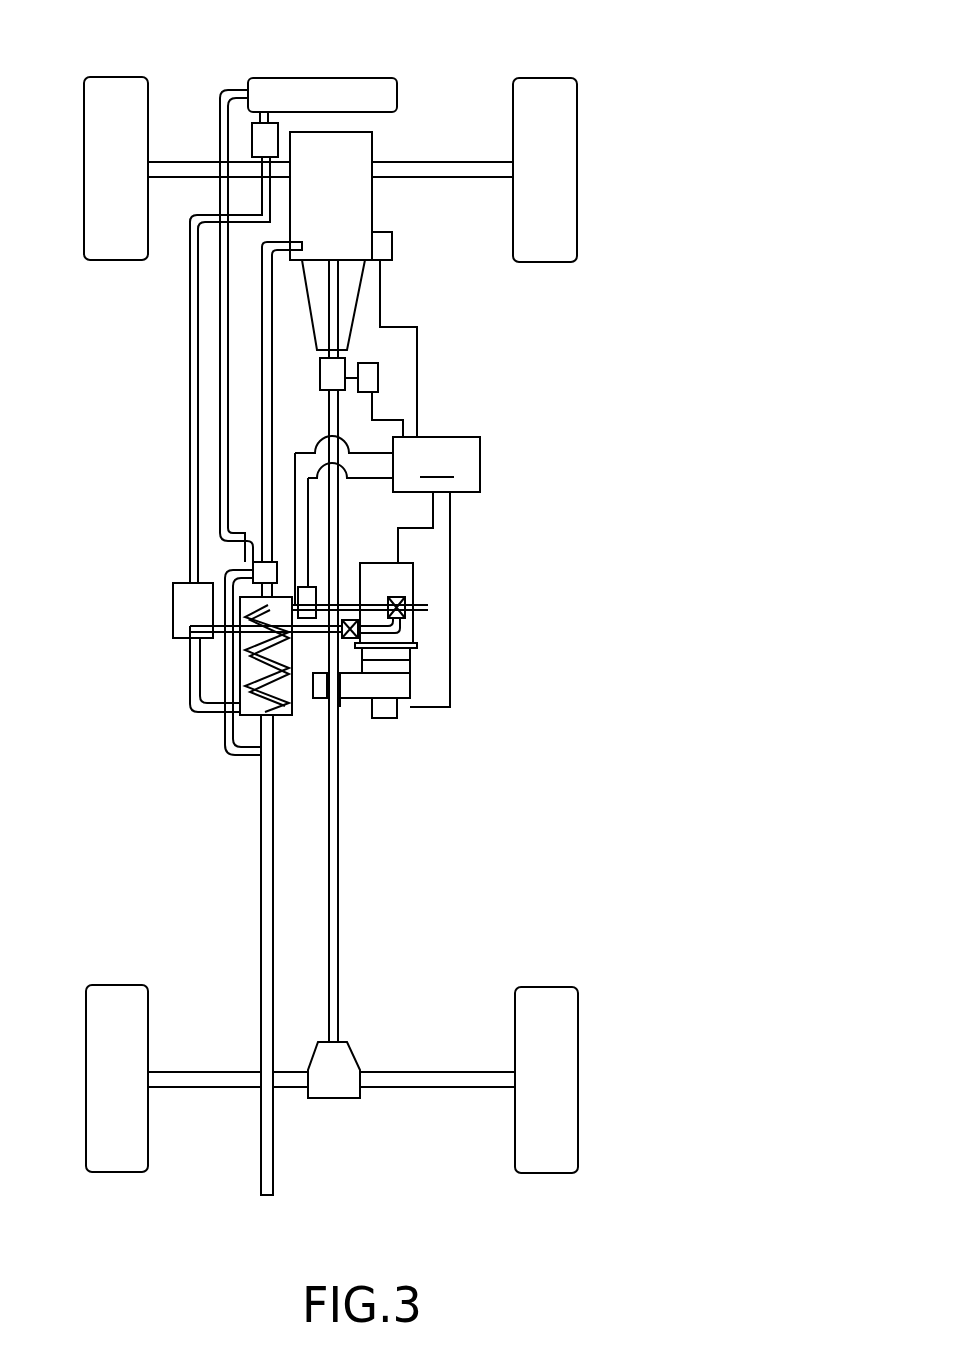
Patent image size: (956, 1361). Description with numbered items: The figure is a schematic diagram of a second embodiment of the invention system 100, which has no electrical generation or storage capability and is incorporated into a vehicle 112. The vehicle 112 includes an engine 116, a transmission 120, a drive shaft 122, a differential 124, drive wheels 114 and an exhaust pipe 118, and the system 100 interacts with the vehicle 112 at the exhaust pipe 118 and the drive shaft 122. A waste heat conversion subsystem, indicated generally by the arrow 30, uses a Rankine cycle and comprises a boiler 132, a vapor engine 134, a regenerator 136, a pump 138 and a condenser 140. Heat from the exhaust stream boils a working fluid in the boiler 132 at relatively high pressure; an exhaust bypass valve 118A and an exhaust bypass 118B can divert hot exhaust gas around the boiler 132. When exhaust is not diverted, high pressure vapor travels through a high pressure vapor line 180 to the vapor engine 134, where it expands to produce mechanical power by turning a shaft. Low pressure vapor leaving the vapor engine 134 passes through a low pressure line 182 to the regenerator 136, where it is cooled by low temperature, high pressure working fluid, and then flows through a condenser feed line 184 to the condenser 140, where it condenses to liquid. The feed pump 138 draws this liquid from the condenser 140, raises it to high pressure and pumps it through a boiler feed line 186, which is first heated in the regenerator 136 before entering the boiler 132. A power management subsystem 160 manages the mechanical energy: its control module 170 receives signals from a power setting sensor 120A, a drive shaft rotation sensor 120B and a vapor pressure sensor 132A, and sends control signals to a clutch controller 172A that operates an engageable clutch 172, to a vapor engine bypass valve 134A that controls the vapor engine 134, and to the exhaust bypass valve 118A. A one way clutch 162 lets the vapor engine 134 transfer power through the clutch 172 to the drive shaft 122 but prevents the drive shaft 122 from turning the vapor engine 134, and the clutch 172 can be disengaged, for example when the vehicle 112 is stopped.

The heating system 30 is at (115, 758).
The system 100 is at (630, 408).
The vehicle 112 is at (612, 68).
The drive wheels 114 is at (100, 1075).
The engine 116 is at (372, 206).
The exhaust pipe 118 is at (262, 431).
The exhaust bypass valve 118A is at (253, 565).
The exhaust bypass 118B is at (225, 730).
The transmission 120 is at (355, 310).
The power setting sensor 120A is at (392, 246).
The drive shaft rotation sensor 120B is at (378, 373).
The drive shaft 122 is at (345, 436).
The differential 124 is at (355, 1058).
The boiler 132 is at (240, 682).
The vapor pressure sensor 132A is at (305, 590).
The vapor engine 134 is at (398, 563).
The vapor engine bypass valve 134A is at (353, 620).
The regenerator 136 is at (173, 597).
The pump 138 is at (278, 130).
The condenser 140 is at (362, 78).
The power management subsystem 160 is at (680, 738).
The one way clutch 162 is at (412, 653).
The control module 170 is at (436, 572).
The clutch 172 is at (345, 700).
The clutch controller 172A is at (390, 718).
The high pressure vapor line 180 is at (428, 603).
The low pressure line 182 is at (190, 628).
The condenser feed line 184 is at (218, 118).
The boiler feed line 186 is at (190, 305).